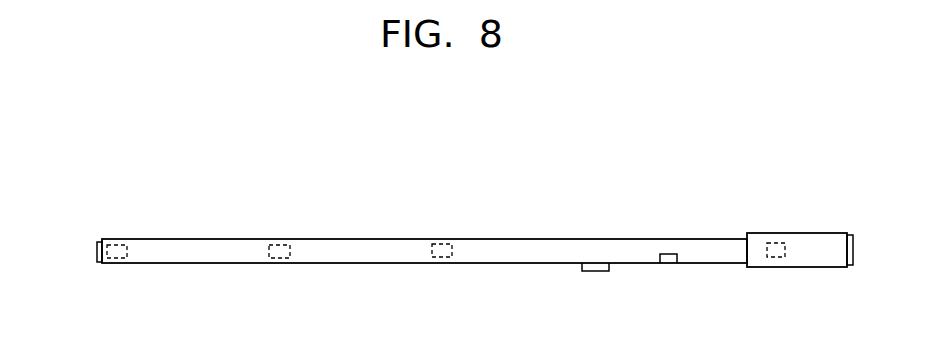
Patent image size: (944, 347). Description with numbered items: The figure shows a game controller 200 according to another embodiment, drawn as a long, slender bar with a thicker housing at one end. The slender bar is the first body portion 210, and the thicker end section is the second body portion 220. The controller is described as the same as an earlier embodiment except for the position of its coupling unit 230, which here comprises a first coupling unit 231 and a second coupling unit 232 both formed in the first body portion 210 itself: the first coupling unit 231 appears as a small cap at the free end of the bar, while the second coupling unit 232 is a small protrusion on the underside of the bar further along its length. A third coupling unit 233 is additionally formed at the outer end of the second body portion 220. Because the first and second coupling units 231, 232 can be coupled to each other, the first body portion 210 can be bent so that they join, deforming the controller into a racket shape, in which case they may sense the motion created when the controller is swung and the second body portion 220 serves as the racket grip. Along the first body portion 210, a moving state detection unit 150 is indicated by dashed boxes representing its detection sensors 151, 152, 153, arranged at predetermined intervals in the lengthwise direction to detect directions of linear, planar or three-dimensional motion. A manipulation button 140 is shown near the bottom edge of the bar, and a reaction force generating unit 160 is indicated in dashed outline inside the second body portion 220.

The game controller 200 is at (755, 161).
The first body portion 210 is at (513, 257).
The second body portion 220 is at (783, 268).
The coupling unit 230 is at (71, 188).
The first coupling unit 231 is at (99, 242).
The second coupling unit 232 is at (595, 271).
The third coupling unit 233 is at (853, 268).
The manipulation button 140 is at (668, 263).
The moving state detection unit 150 is at (125, 188).
The detection sensor 151 is at (127, 247).
The detection sensor 152 is at (280, 248).
The detection sensor 153 is at (443, 247).
The reaction force generating unit 160 is at (775, 243).